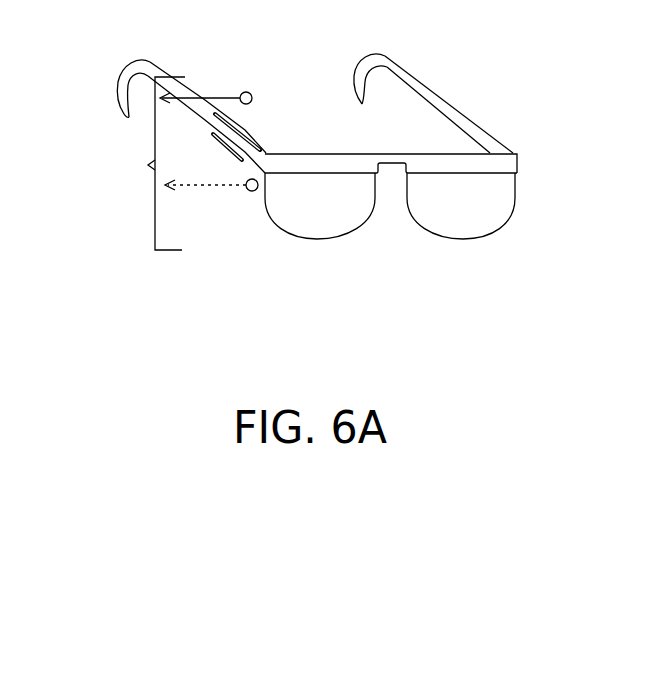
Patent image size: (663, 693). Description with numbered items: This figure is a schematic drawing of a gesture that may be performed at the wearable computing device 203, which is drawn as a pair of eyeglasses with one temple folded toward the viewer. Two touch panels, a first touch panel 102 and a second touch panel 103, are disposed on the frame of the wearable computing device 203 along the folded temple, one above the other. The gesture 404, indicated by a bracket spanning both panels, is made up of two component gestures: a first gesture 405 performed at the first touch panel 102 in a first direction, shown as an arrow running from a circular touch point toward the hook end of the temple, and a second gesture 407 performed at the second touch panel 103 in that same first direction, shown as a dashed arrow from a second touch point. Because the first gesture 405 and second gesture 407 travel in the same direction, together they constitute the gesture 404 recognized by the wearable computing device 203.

The first touch panel 102 is at (253, 137).
The second touch panel 103 is at (237, 148).
The wearable computing device 203 is at (455, 102).
The gesture 404 is at (148, 165).
The first gesture 405 is at (222, 98).
The second gesture 407 is at (224, 188).